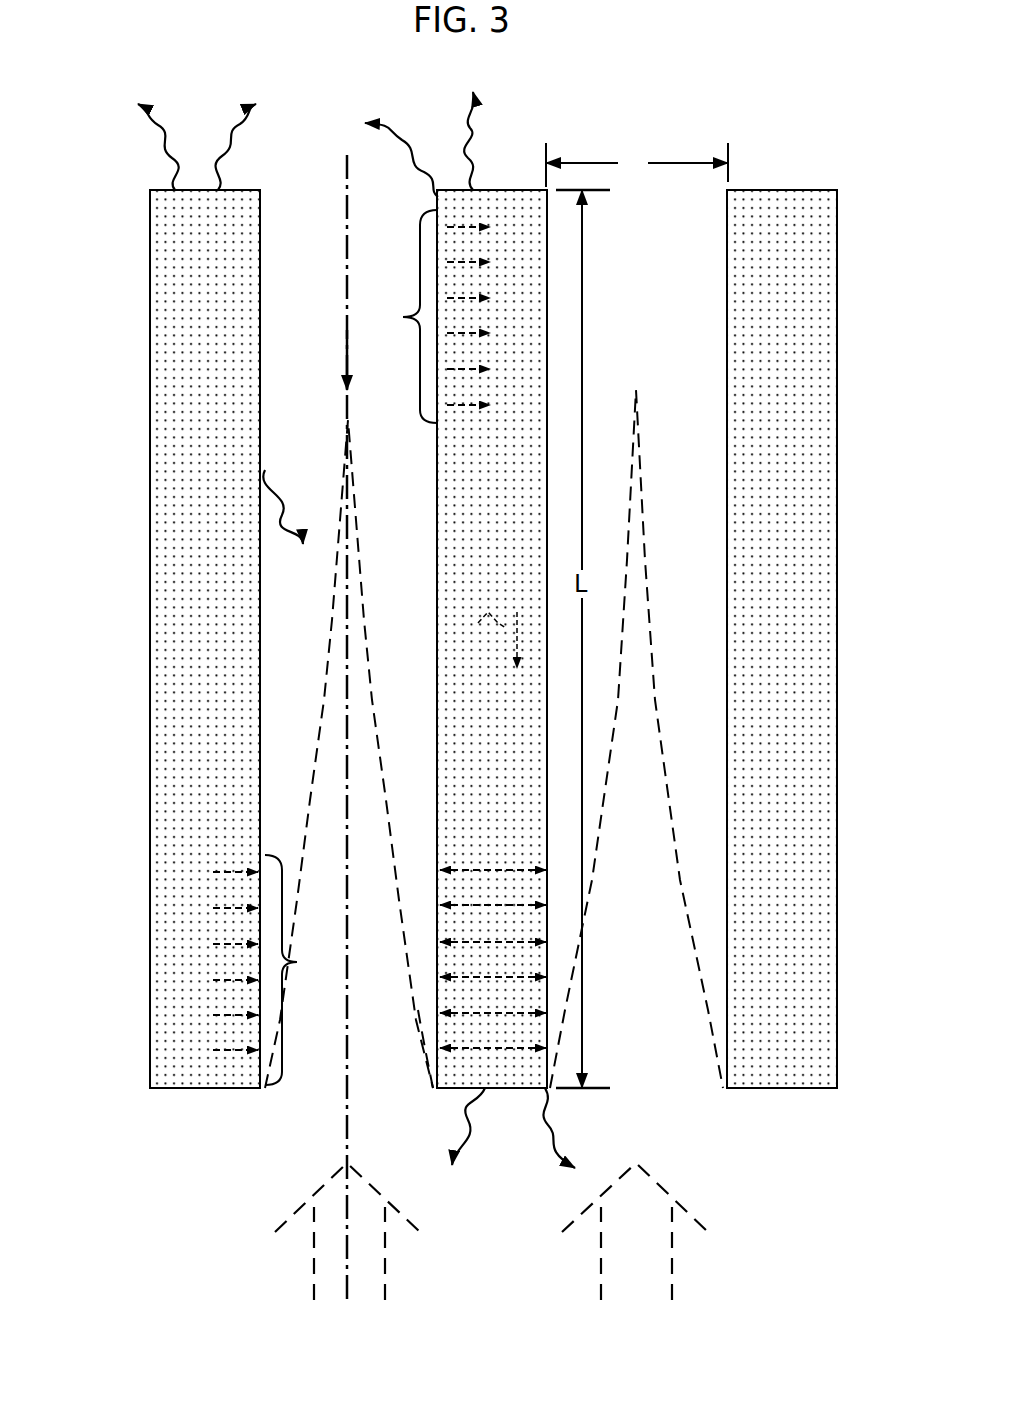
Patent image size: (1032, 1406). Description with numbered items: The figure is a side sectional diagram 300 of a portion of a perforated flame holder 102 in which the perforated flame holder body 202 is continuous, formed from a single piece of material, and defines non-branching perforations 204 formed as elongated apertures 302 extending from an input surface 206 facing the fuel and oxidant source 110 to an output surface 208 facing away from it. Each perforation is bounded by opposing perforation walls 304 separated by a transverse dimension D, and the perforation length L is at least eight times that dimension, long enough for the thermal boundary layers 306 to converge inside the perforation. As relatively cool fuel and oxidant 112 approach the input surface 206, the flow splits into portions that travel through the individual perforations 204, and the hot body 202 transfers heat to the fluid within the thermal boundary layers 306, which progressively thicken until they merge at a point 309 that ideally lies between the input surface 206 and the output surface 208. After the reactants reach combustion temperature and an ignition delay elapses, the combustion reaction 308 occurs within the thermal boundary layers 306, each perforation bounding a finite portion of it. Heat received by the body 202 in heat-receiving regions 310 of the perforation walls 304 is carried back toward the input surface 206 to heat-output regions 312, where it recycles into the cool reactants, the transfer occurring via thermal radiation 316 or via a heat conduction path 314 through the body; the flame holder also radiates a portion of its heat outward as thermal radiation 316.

The side sectional diagram 300 is at (752, 124).
The perforated flame holder 102 is at (150, 912).
The fuel and oxidant source 110 is at (692, 1092).
The fuel and oxidant 112 is at (314, 1268).
The perforated flame holder body 202 is at (222, 577).
The perforations 204 is at (318, 1066).
The elongated apertures 302 is at (225, 945).
The input surface 206 is at (212, 1094).
The output surface 208 is at (516, 184).
The perforation walls 304 is at (268, 283).
The thermal boundary layers 306 is at (421, 1034).
The combustion reaction 308 is at (324, 460).
The point 309 is at (397, 292).
The heat-receiving regions 310 is at (403, 317).
The heat-output regions 312 is at (379, 970).
The heat conduction path 314 is at (486, 640).
The thermal radiation 316 is at (222, 122).